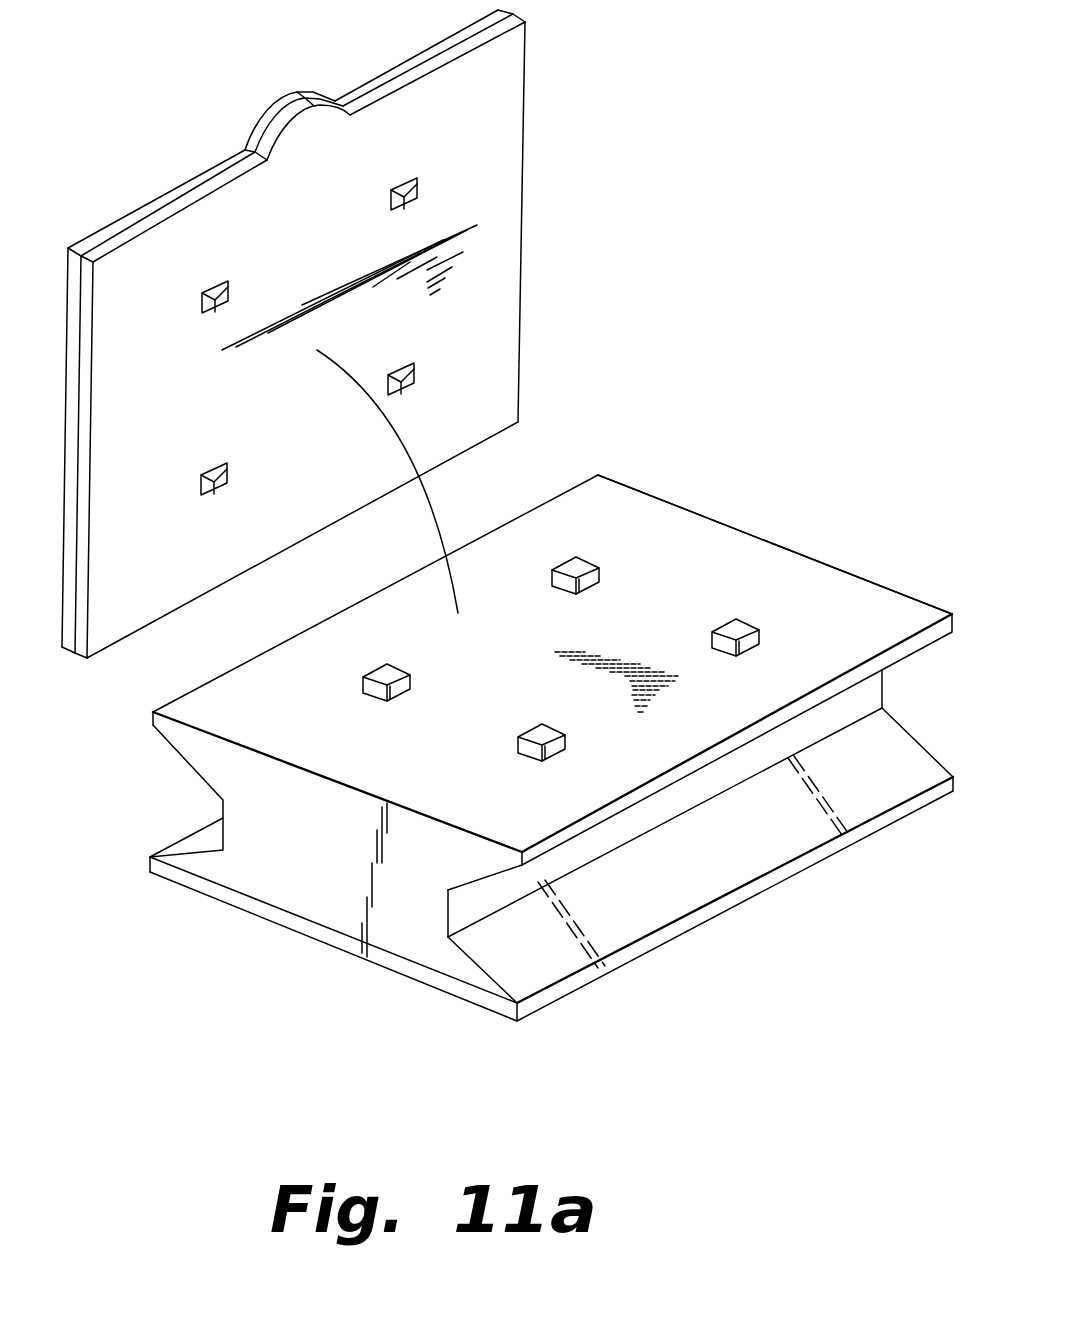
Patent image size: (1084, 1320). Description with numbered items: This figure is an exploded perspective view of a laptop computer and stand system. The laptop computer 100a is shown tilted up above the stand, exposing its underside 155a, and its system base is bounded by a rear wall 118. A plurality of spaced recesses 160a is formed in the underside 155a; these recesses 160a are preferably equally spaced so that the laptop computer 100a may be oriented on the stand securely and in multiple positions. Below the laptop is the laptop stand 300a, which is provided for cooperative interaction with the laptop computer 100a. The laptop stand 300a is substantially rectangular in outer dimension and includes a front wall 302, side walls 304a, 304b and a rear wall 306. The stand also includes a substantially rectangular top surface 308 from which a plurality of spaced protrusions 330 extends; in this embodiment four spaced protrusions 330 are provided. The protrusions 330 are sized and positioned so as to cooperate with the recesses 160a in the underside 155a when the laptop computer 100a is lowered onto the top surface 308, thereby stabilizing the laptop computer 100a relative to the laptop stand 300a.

The laptop computer 100a is at (343, 363).
The rear wall 118 is at (120, 650).
The underside 155a is at (500, 278).
The spaced recesses 160a is at (417, 186).
The laptop stand 300a is at (524, 738).
The front wall 302 is at (686, 850).
The side wall 304a is at (722, 515).
The side wall 304b is at (412, 950).
The rear wall 306 is at (220, 815).
The top surface 308 is at (830, 597).
The spaced protrusions 330 is at (585, 571).